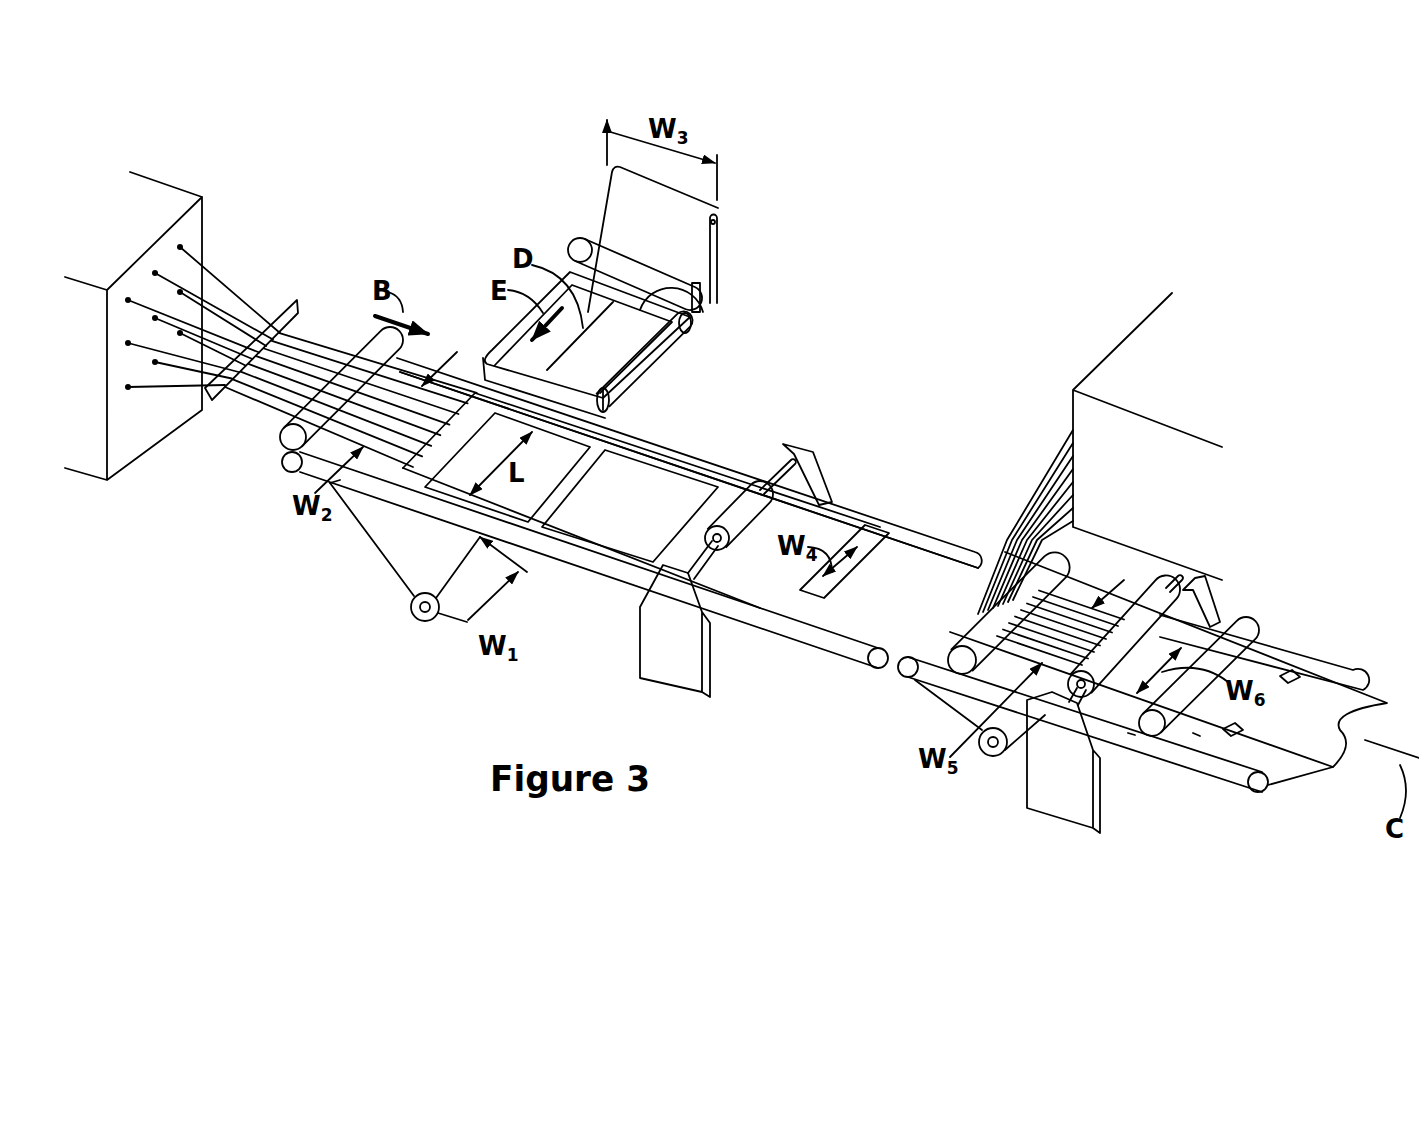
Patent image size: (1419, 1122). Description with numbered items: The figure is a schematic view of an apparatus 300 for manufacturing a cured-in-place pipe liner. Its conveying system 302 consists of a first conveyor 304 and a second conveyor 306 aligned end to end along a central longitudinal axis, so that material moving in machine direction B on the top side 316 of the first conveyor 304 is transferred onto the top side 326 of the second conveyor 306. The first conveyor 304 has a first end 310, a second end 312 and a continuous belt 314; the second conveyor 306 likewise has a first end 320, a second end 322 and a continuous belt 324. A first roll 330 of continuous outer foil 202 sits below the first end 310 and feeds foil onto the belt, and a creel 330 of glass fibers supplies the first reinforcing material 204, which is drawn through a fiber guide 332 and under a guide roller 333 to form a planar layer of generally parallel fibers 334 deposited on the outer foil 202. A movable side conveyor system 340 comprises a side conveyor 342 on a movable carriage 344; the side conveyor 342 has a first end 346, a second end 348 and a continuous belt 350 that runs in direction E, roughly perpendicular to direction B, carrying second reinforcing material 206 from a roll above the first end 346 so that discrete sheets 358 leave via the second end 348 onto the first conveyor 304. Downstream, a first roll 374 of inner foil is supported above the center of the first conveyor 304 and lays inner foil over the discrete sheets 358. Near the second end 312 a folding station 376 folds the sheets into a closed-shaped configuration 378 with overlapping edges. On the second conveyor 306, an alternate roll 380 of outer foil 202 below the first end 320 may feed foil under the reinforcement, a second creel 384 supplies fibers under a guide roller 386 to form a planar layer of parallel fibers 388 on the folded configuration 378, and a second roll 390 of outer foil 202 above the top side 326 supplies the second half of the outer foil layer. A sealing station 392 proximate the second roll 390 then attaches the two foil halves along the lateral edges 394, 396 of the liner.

The apparatus 300 is at (404, 120).
The outer foil 202 is at (406, 606).
The first reinforcing material 204 is at (248, 280).
The second reinforcing material 206 is at (727, 215).
The conveying system 302 is at (583, 634).
The first conveyor 304 is at (538, 546).
The second conveyor 306 is at (1160, 753).
The first end 310 is at (284, 476).
The second end 312 is at (868, 672).
The continuous belt 314 is at (358, 480).
The top side 316 is at (297, 472).
The first end 320 is at (904, 690).
The second end 322 is at (1259, 798).
The continuous belt 324 is at (1128, 733).
The top side 326 is at (1193, 733).
The first roll / creel 330 is at (160, 178).
The fiber guide 332 is at (297, 298).
The guide roller 333 is at (280, 439).
The planar layer of generally parallel fibers 334 is at (443, 397).
The movable side conveyor system 340 is at (538, 226).
The side conveyor 342 is at (640, 368).
The movable carriage 344 is at (722, 300).
The first end 346 is at (698, 334).
The second end 348 is at (612, 412).
The continuous belt 350 is at (705, 298).
The discrete sheets 358 is at (586, 310).
The first roll of inner foil 374 is at (753, 505).
The folding station 376 is at (889, 522).
The closed-shaped configuration 378 is at (938, 574).
The alternate roll 380 is at (997, 760).
The creel 384 is at (1113, 360).
The guide roller 386 is at (1055, 562).
The planar layer of generally parallel fibers 388 is at (1063, 627).
The second roll of outer foil 390 is at (1165, 593).
The sealing station 392 is at (1290, 670).
The lateral edge 394 is at (1345, 690).
The lateral edge 396 is at (1260, 732).